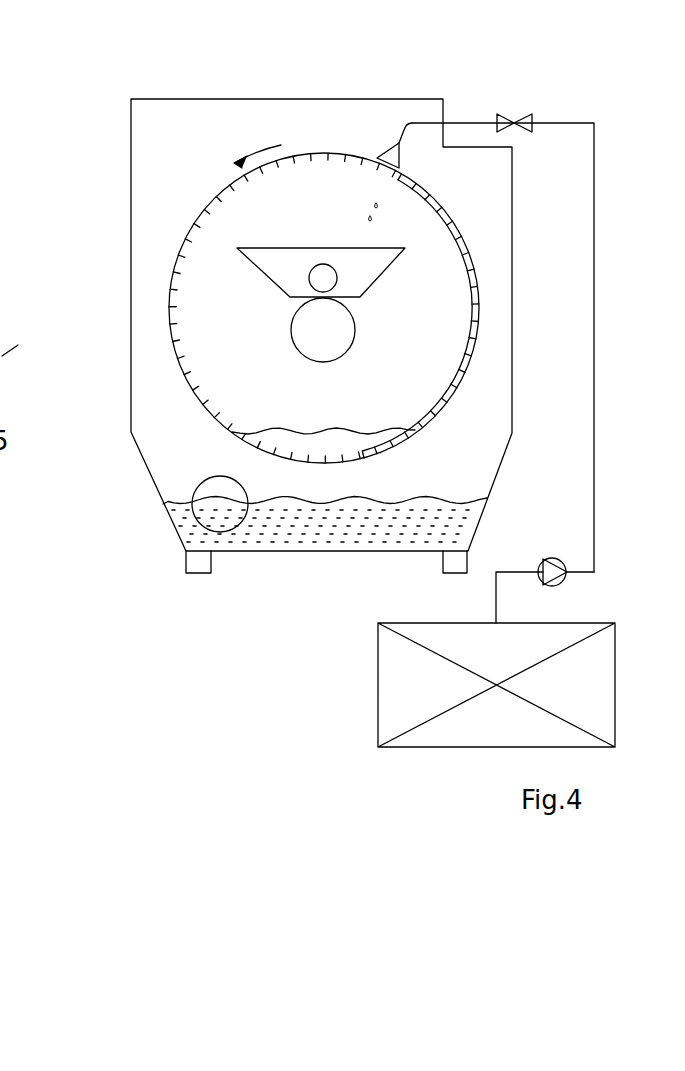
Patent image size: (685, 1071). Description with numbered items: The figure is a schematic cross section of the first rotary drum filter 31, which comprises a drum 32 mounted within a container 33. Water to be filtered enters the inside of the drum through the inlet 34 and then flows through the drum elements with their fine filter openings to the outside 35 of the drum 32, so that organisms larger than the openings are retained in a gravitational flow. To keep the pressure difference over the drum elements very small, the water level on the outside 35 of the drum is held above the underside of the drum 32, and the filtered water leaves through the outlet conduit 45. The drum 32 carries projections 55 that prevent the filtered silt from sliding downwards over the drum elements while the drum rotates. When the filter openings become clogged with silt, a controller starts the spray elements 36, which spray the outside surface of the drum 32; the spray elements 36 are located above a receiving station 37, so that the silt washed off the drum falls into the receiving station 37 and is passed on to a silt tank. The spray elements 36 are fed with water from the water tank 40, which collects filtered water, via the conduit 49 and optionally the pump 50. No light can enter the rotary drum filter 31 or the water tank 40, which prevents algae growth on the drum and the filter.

The first rotary drum filter 31 is at (606, 214).
The drum 32 is at (172, 268).
The container 33 is at (131, 395).
The inlet 34 is at (302, 342).
The outside of the drum 35 is at (178, 472).
The spray elements 36 is at (388, 124).
The receiving station 37 is at (258, 262).
The water tank 40 is at (390, 676).
The outlet conduit 45 is at (194, 486).
The conduit 49 is at (597, 432).
The pump 50 is at (567, 577).
The projections 55 is at (176, 318).